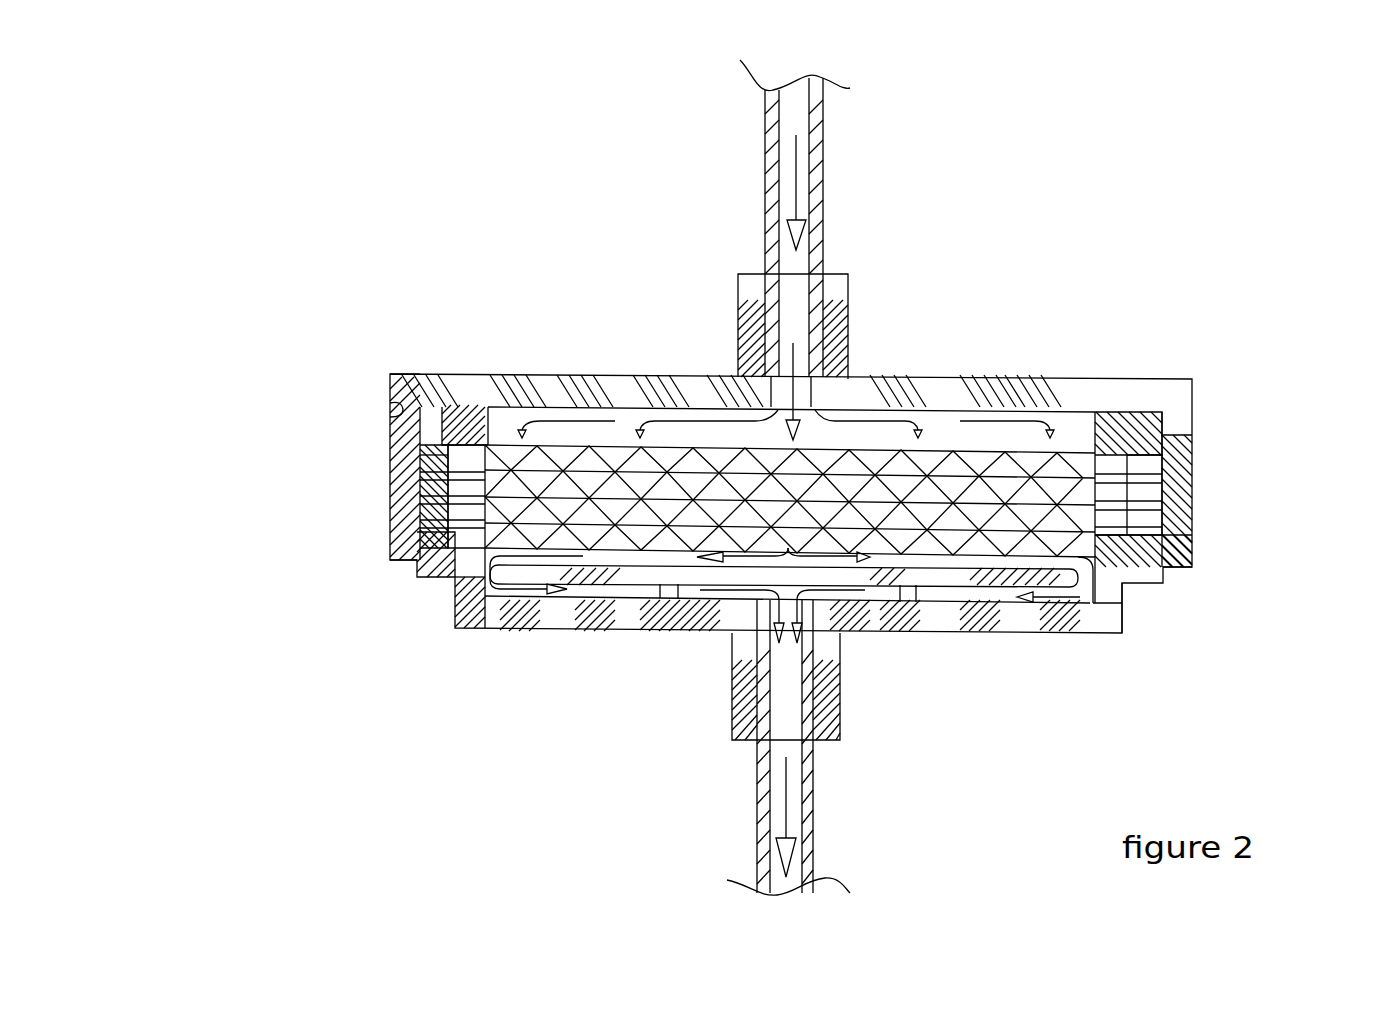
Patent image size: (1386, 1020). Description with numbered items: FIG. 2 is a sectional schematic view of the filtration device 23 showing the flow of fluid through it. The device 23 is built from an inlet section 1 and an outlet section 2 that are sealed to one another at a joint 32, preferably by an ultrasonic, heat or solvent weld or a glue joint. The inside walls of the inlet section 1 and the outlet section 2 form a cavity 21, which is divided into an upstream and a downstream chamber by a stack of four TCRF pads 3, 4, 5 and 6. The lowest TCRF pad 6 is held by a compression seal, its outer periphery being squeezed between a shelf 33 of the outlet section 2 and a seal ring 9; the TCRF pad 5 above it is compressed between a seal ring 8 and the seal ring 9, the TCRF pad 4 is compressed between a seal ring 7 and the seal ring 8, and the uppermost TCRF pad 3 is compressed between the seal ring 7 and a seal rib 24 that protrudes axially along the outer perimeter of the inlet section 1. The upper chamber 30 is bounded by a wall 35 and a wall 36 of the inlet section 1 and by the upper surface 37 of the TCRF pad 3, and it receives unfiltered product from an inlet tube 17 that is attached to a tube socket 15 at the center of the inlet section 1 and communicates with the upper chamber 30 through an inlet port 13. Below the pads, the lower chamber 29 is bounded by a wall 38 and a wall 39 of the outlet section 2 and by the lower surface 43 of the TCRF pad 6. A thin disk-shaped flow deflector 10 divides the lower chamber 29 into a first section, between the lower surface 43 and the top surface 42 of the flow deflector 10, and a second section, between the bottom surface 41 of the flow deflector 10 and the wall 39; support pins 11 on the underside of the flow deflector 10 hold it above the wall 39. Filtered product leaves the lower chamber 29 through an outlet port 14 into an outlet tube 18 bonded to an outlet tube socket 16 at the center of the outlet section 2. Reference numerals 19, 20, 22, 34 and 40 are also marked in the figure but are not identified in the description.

The inlet section 1 is at (1030, 380).
The outlet section 2 is at (1192, 492).
The TCRF pad 3 is at (507, 450).
The TCRF pad 4 is at (1195, 560).
The TCRF pad 5 is at (1093, 560).
The TCRF pad 6 is at (448, 577).
The seal ring 7 is at (423, 445).
The seal ring 8 is at (430, 492).
The seal ring 9 is at (452, 510).
The flow deflector 10 is at (600, 622).
The support pins 11 is at (935, 595).
The inlet port 13 is at (768, 402).
The outlet port 14 is at (692, 583).
The tube socket 15 is at (848, 307).
The outlet tube socket 16 is at (842, 673).
The inlet tube 17 is at (822, 153).
The outlet tube 18 is at (815, 800).
The inlet flow 19 is at (780, 177).
The outlet flow 20 is at (780, 805).
The cavity 21 is at (1043, 418).
The return channel right end 22 is at (1077, 602).
The filtration device 23 is at (242, 407).
The seal rib 24 is at (1127, 442).
The lower chamber 29 is at (640, 573).
The upper chamber 30 is at (940, 410).
The joint 32 is at (392, 418).
The shelf 33 is at (1133, 585).
The cap bottom step 34 is at (437, 556).
The wall 35 is at (412, 375).
The wall 36 is at (538, 408).
The upper surface 37 is at (632, 420).
The wall 38 is at (472, 625).
The wall 39 is at (515, 610).
The lower chamber bottom wall 40 is at (493, 613).
The bottom surface 41 is at (670, 553).
The top surface 42 is at (688, 565).
The lower surface 43 is at (905, 560).